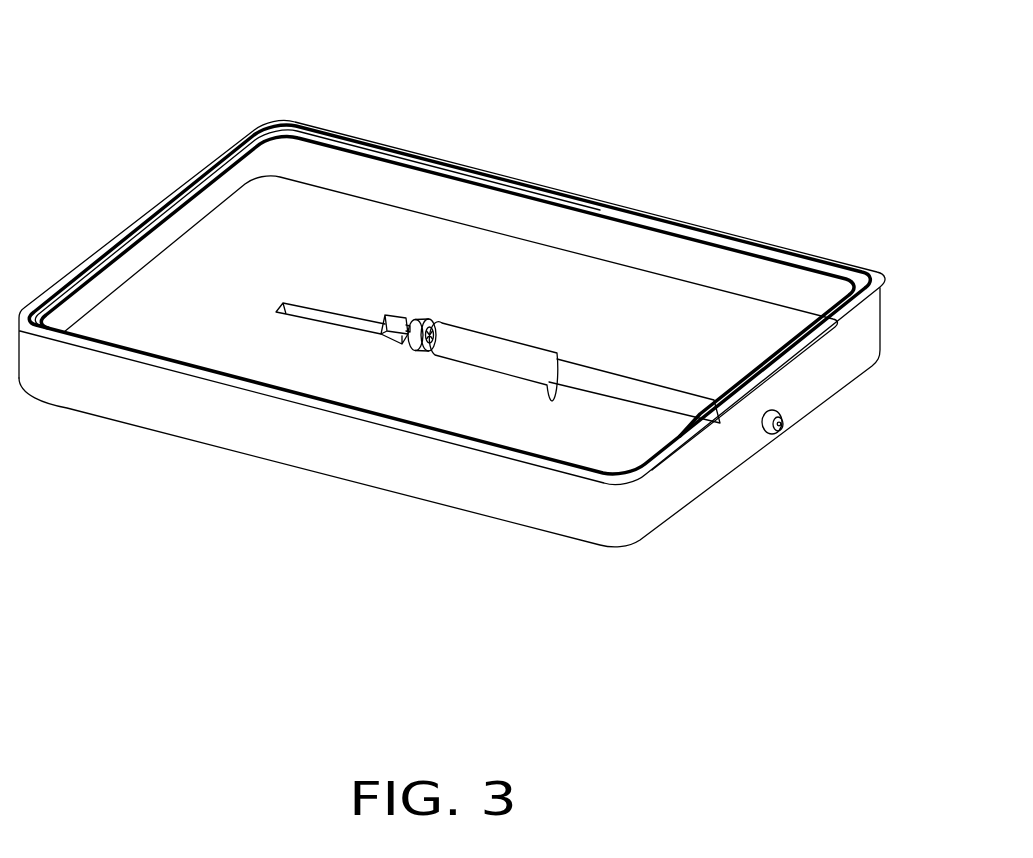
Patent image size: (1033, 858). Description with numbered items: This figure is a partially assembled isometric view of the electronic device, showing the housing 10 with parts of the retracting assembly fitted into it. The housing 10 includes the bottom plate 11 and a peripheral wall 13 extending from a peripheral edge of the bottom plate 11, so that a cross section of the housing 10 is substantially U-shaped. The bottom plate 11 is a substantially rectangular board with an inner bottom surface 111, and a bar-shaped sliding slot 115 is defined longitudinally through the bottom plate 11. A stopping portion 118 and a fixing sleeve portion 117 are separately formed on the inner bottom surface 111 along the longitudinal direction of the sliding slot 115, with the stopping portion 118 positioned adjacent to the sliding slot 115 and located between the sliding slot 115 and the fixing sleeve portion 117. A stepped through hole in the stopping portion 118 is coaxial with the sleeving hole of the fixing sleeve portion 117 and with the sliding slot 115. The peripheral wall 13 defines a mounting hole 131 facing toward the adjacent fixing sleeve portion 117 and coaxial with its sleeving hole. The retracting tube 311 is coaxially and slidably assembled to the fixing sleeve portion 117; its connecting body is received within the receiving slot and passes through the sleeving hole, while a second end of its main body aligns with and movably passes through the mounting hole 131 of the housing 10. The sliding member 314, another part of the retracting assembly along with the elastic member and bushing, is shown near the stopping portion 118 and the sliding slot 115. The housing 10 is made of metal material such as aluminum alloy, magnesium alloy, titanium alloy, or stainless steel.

The housing 10 is at (452, 297).
The bottom plate 11 is at (449, 332).
The peripheral wall 13 is at (336, 162).
The inner bottom surface 111 is at (215, 263).
The sliding slot 115 is at (308, 317).
The fixing sleeve portion 117 is at (509, 361).
The stopping portion 118 is at (416, 341).
The mounting hole 131 is at (765, 440).
The retracting tube 311 is at (620, 381).
The sliding member 314 is at (395, 331).